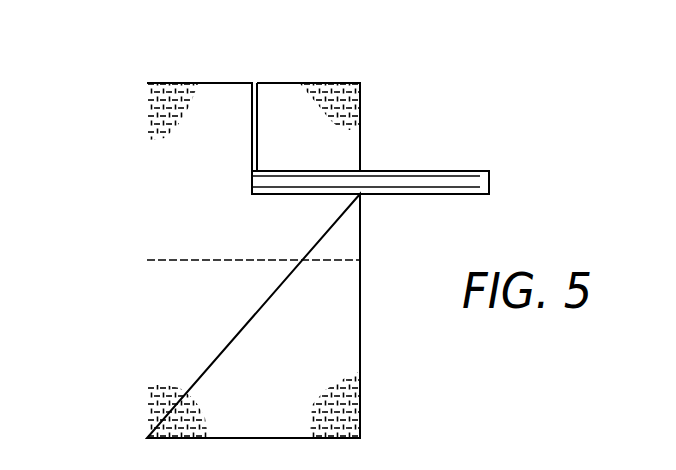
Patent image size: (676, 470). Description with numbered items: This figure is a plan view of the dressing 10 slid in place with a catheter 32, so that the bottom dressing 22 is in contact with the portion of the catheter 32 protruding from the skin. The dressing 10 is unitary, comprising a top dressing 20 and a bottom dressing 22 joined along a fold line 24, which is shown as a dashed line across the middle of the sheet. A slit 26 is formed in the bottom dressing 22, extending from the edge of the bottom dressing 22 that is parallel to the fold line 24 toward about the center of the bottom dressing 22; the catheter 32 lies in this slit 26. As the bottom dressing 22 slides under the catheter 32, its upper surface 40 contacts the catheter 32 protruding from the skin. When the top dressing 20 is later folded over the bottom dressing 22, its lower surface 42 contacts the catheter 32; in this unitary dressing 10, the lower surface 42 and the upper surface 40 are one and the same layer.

The dressing 10 is at (104, 187).
The top dressing 20 is at (328, 312).
The bottom dressing 22 is at (330, 232).
The fold line 24 is at (147, 260).
The slit 26 is at (253, 80).
The catheter 32 is at (435, 177).
The upper surface of the bottom dressing 40 is at (333, 147).
The lower surface of the top dressing 42 is at (340, 352).